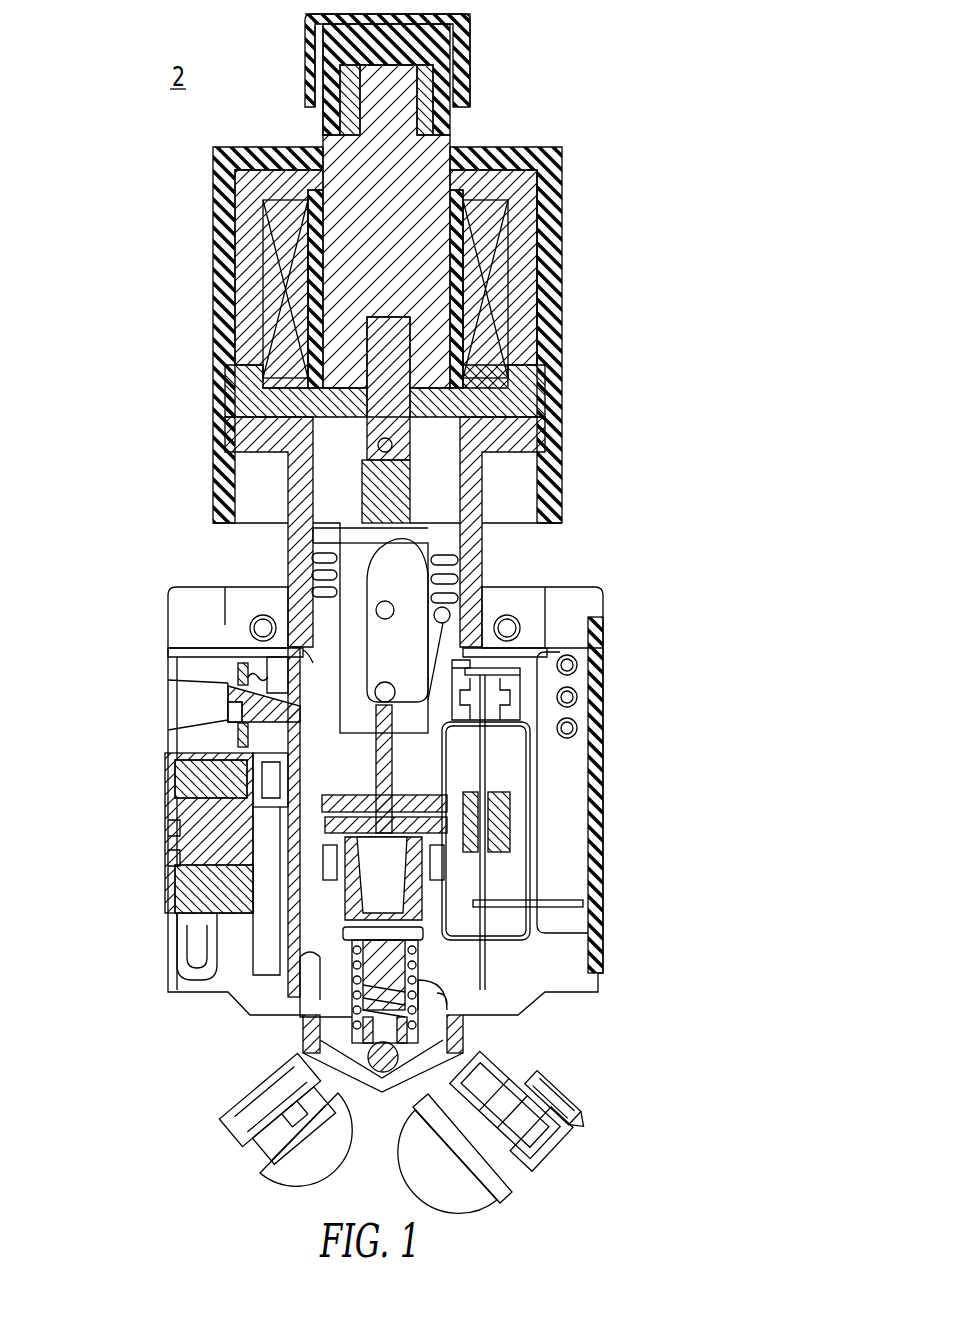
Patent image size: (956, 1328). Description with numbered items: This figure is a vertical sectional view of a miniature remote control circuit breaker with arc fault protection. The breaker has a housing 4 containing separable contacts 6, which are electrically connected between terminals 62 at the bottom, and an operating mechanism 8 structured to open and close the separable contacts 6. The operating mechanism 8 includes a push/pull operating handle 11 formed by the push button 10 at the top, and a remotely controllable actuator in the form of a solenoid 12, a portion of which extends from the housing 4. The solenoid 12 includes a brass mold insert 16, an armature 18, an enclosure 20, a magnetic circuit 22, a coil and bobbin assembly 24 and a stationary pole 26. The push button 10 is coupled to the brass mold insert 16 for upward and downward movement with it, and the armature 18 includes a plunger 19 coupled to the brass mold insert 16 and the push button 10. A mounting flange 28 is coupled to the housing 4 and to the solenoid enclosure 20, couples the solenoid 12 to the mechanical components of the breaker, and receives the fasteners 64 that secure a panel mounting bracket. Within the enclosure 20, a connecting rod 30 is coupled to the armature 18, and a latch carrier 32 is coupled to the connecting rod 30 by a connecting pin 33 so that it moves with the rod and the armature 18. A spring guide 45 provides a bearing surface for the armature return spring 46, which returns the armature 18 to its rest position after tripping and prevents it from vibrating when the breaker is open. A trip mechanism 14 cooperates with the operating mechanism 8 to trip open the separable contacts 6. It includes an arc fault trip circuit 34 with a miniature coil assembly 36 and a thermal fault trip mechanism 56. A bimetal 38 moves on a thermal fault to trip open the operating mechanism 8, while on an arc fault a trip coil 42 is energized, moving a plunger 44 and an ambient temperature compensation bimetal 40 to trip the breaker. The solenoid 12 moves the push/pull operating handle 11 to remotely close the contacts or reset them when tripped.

The housing 4 is at (185, 588).
The separable contacts 6 is at (333, 935).
The operating mechanism 8 is at (422, 762).
The push button 10 is at (340, 43).
The push/pull operating handle 11 is at (502, 115).
The solenoid 12 is at (518, 230).
The trip mechanism 14 is at (500, 768).
The brass mold insert 16 is at (350, 95).
The armature 18 is at (363, 152).
The plunger 19 is at (430, 95).
The enclosure 20 is at (224, 187).
The magnetic circuit 22 is at (246, 234).
The coil and bobbin assembly 24 is at (278, 283).
The stationary pole 26 is at (282, 402).
The mounting flange 28 is at (247, 430).
The connecting rod 30 is at (395, 412).
The latch carrier 32 is at (395, 482).
The connecting pin 33 is at (378, 443).
The arc fault trip circuit 34 is at (152, 858).
The miniature coil assembly 36 is at (152, 828).
The bimetal 38 is at (497, 783).
The ambient temperature compensation bimetal 40 is at (300, 762).
The trip coil 42 is at (178, 812).
The plunger 44 is at (300, 800).
The spring guide 45 is at (447, 527).
The armature return spring 46 is at (460, 555).
The thermal fault trip mechanism 56 is at (500, 732).
The terminals 62 is at (405, 1160).
The fasteners 64 is at (260, 625).